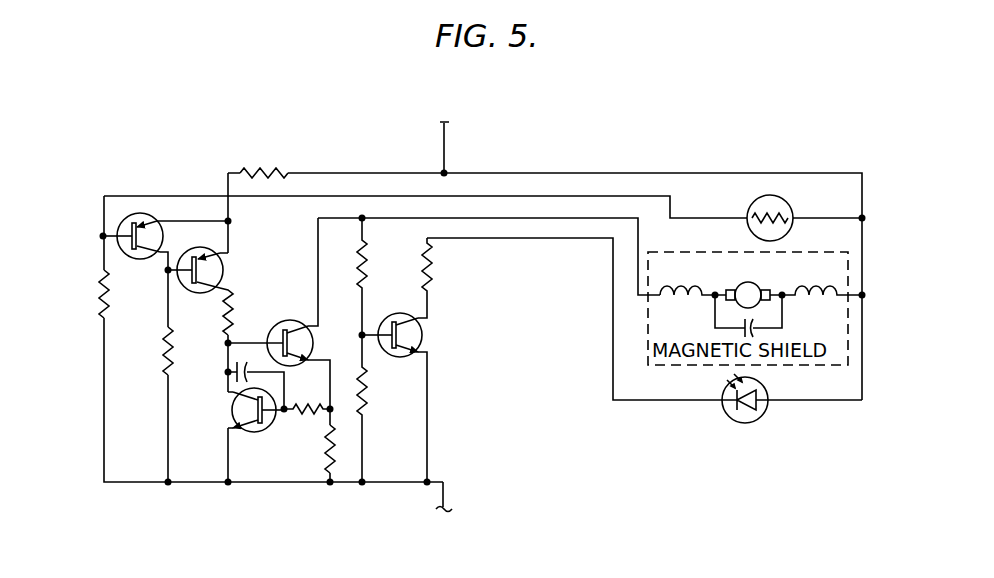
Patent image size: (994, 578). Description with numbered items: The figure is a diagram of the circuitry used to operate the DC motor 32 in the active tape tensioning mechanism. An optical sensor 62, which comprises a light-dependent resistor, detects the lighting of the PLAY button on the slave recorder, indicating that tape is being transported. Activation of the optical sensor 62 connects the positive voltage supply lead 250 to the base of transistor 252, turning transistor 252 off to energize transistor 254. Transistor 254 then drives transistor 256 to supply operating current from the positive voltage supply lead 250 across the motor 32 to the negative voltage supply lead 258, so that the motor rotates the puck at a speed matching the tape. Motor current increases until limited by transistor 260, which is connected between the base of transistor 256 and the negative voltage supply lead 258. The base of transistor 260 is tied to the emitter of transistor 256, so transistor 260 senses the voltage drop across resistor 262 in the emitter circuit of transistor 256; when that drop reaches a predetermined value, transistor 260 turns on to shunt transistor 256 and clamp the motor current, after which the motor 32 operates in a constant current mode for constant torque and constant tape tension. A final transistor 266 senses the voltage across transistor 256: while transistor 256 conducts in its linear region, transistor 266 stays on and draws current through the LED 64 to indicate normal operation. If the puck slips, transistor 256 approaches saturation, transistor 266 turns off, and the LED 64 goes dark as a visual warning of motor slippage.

The positive voltage supply lead 250 is at (444, 140).
The transistor 252 is at (143, 260).
The transistor 254 is at (222, 269).
The transistor 256 is at (291, 320).
The negative voltage supply lead 258 is at (445, 494).
The transistor 260 is at (232, 409).
The resistor 262 is at (326, 458).
The transistor 266 is at (422, 333).
The optical sensor 62 is at (786, 202).
The DC motor 32 is at (747, 279).
The LED 64 is at (746, 424).